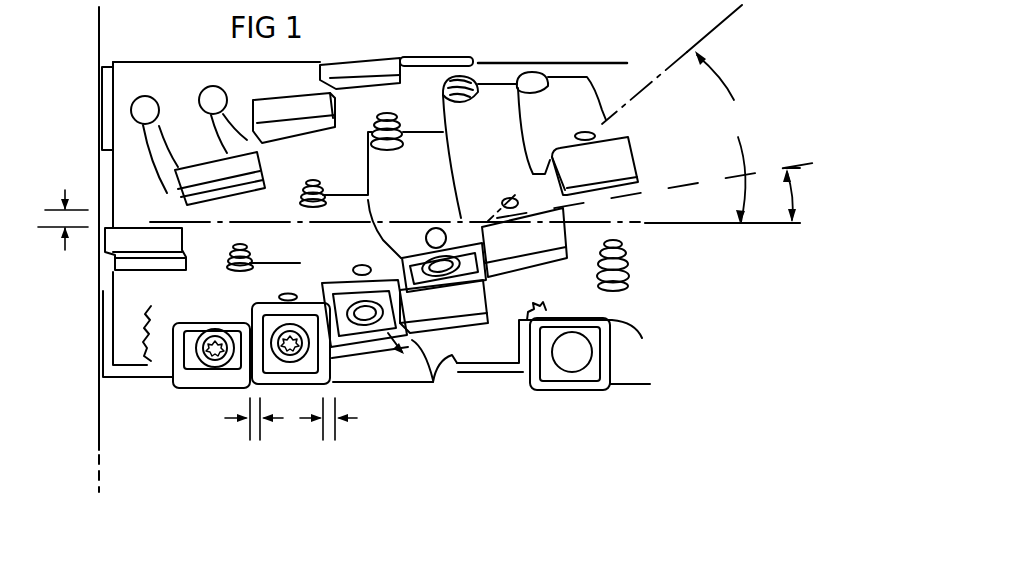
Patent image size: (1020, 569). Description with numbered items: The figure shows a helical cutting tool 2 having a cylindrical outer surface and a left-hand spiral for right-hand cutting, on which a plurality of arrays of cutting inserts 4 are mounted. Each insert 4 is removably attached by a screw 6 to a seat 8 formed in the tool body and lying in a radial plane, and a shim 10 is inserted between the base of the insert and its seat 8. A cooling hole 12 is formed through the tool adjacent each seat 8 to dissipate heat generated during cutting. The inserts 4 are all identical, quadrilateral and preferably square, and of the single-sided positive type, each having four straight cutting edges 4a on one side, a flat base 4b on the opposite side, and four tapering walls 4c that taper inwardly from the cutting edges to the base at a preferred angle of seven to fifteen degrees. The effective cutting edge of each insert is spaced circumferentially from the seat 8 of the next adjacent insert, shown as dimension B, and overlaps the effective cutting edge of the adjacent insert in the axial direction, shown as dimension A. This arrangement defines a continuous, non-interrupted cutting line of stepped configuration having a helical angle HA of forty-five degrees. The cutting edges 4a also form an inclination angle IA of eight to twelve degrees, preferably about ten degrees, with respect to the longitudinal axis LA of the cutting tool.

The helical cutting tool 2 is at (189, 58).
The cutting inserts 4 is at (373, 68).
The cutting edges 4a is at (468, 228).
The flat base 4b is at (467, 362).
The tapering walls 4c is at (478, 290).
The screws 6 is at (366, 308).
The seats 8 is at (250, 192).
The shim 10 is at (312, 183).
The cooling hole 12 is at (287, 294).
The axial overlap dimension A is at (292, 419).
The circumferential spacing dimension B is at (63, 203).
The longitudinal axis LA is at (690, 228).
The helical angle HA is at (646, 114).
The inclination angle IA is at (683, 191).